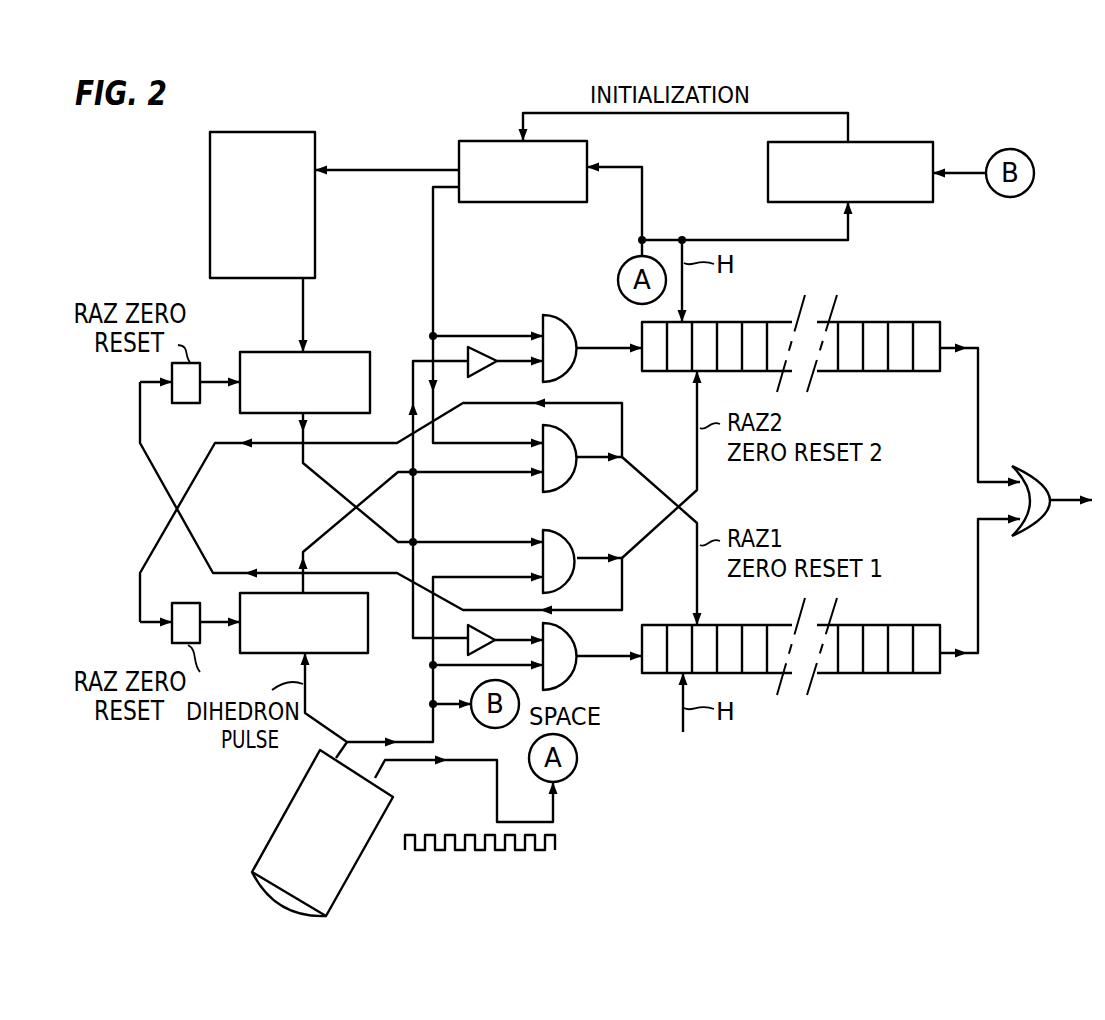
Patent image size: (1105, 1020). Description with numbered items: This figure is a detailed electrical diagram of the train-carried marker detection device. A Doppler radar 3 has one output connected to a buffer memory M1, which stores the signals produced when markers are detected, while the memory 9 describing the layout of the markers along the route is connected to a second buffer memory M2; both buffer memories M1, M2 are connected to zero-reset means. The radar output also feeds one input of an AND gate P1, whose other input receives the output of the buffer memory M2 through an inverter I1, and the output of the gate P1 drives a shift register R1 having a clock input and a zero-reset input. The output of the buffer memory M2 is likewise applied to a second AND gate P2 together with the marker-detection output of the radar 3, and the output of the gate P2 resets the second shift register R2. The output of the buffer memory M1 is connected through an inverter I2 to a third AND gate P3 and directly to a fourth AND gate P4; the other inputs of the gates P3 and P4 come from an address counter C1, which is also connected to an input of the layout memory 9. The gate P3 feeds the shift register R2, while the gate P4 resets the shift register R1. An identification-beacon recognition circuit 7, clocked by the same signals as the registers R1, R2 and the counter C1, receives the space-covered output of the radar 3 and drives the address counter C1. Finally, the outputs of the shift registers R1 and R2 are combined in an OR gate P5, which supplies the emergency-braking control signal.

The memory 9 is at (255, 201).
The identification-beacon recognition circuit 7 is at (840, 184).
The Doppler radar 3 is at (272, 830).
The address counter C1 is at (523, 171).
The buffer memory M1 is at (270, 623).
The buffer memory M2 is at (271, 382).
The AND gate P1 is at (570, 636).
The second AND gate P2 is at (562, 533).
The third AND gate P3 is at (562, 318).
The fourth AND gate P4 is at (562, 428).
The OR gate P5 is at (1040, 478).
The inverter I1 is at (480, 627).
The inverter I2 is at (479, 349).
The shift register R1 is at (785, 638).
The second shift register R2 is at (750, 342).